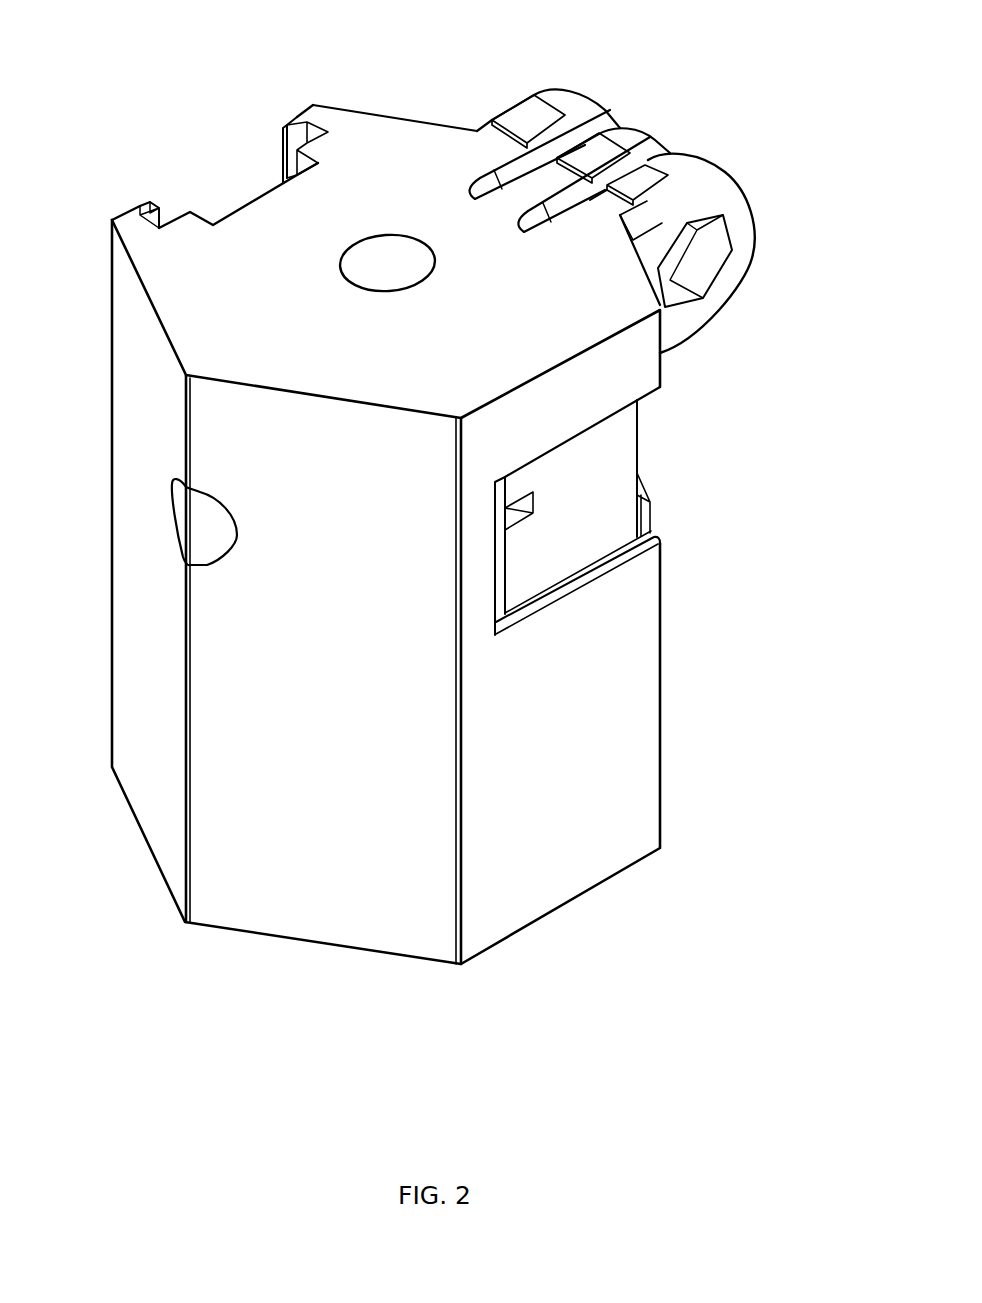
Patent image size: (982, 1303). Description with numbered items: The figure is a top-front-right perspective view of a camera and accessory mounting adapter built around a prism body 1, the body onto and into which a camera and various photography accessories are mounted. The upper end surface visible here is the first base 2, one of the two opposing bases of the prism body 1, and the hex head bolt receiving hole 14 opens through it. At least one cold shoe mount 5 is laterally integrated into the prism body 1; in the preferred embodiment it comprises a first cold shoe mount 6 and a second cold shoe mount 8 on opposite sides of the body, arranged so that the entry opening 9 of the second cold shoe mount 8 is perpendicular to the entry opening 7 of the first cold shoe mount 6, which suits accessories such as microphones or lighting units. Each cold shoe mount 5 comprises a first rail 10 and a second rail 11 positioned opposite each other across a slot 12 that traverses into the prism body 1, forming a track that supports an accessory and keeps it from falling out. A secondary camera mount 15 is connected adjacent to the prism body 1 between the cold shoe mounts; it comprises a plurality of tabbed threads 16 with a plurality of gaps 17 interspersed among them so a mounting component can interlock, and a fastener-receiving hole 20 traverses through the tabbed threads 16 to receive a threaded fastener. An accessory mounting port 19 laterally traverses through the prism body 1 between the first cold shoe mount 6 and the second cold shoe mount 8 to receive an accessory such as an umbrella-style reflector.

The prism body 1 is at (226, 939).
The first base 2 is at (263, 317).
The cold shoe mount 5 is at (491, 628).
The first cold shoe mount 6 is at (219, 130).
The entry opening 7 is at (247, 203).
The second cold shoe mount 8 is at (493, 549).
The entry opening 9 is at (639, 458).
The first rail 10 is at (150, 201).
The second rail 11 is at (300, 118).
The slot 12 is at (570, 506).
The hex head bolt receiving hole 14 is at (386, 262).
The secondary camera mount 15 is at (498, 92).
The tabbed threads 16 is at (571, 90).
The gaps 17 is at (516, 176).
The accessory mounting port 19 is at (192, 522).
The fastener-receiving hole 20 is at (703, 265).